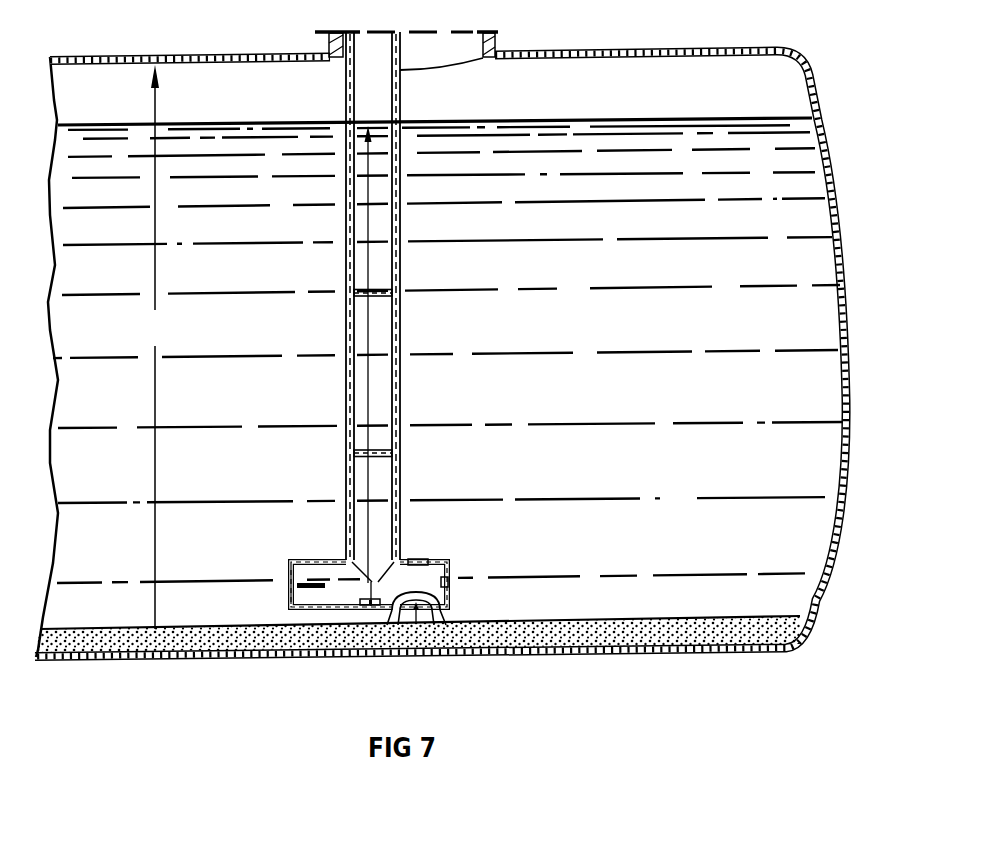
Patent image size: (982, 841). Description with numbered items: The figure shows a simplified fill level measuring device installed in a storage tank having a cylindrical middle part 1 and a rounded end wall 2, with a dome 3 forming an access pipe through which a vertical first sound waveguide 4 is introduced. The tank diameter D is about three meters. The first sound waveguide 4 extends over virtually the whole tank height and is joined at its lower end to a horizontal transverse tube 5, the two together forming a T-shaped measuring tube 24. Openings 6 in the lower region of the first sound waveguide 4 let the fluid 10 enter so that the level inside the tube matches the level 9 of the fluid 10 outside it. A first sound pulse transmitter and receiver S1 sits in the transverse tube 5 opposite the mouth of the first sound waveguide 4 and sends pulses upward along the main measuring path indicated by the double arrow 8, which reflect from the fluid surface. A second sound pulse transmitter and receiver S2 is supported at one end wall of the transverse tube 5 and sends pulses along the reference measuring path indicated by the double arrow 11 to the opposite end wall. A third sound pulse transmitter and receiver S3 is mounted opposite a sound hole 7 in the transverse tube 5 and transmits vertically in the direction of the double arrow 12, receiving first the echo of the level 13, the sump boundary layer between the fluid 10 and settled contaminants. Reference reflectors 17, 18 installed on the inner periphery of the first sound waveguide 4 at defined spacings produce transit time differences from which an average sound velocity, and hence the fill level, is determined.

The cylindrical middle part 1 is at (186, 55).
The end wall 2 is at (825, 149).
The dome 3 is at (498, 38).
The first sound waveguide 4 is at (409, 97).
The transverse tube 5 is at (288, 597).
The openings 6 is at (400, 494).
The sound hole 7 is at (432, 622).
The double arrow 8 is at (370, 274).
The level 9 is at (537, 118).
The fluid 10 is at (595, 331).
The double arrow 11 is at (324, 588).
The vertical double arrow 12 is at (403, 622).
The level 13 is at (543, 617).
The reference reflector 17 is at (401, 453).
The reference reflector 18 is at (401, 297).
The measuring tube 24 is at (313, 559).
The tank diameter D is at (150, 347).
The first sound pulse transmitter and receiver S1 is at (371, 610).
The second sound pulse transmitter and receiver S2 is at (449, 578).
The third sound pulse transmitter and receiver S3 is at (418, 558).